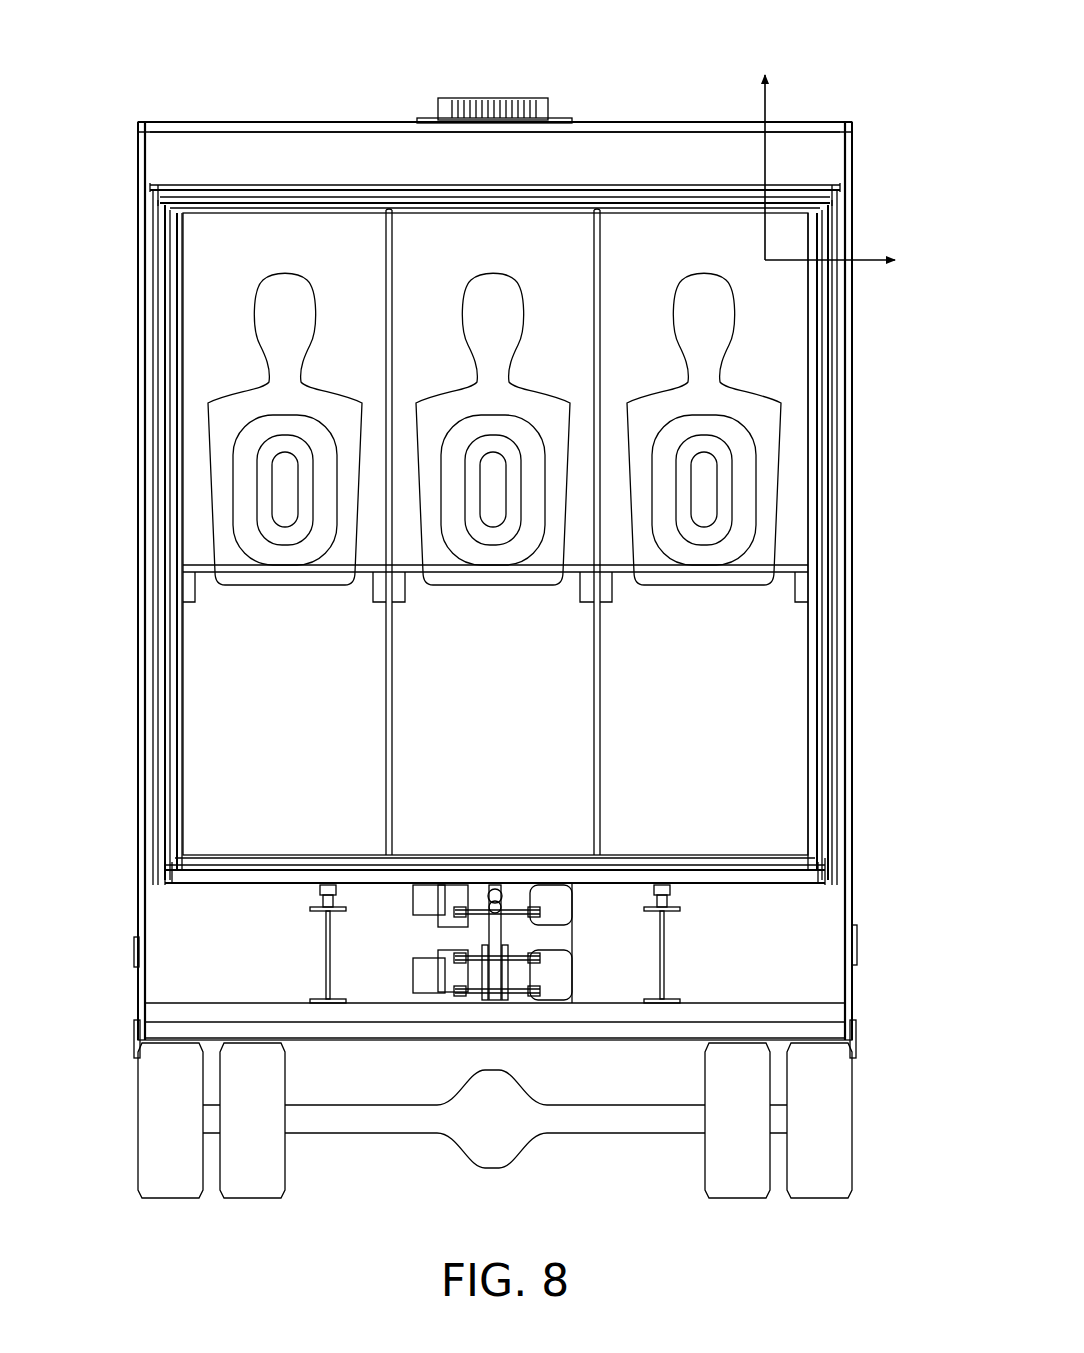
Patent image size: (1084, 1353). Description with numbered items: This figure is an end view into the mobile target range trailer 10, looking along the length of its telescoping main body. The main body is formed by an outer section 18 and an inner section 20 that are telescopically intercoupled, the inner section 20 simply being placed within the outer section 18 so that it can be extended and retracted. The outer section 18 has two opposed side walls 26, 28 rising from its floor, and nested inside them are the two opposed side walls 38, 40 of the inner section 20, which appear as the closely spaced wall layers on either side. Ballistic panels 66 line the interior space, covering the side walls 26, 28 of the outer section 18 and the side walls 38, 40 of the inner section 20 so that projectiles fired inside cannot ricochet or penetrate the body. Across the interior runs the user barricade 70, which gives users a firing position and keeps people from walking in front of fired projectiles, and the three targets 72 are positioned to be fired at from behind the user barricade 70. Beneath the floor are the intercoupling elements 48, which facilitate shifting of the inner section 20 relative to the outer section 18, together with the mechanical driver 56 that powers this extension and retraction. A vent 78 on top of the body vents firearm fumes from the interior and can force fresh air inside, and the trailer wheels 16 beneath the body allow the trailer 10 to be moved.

The mobile target range trailer 10 is at (857, 60).
The trailer wheels 16 is at (138, 1140).
The outer section 18 is at (380, 123).
The inner section 20 is at (315, 197).
The side wall 26 is at (138, 832).
The side wall 28 is at (852, 830).
The side wall 38 is at (160, 705).
The side wall 40 is at (830, 705).
The intercoupling elements 48 is at (270, 942).
The mechanical driver 56 is at (570, 938).
The ballistic panels 66 is at (248, 207).
The user barricade 70 is at (203, 567).
The targets 72 is at (248, 437).
The vents 78 is at (548, 110).